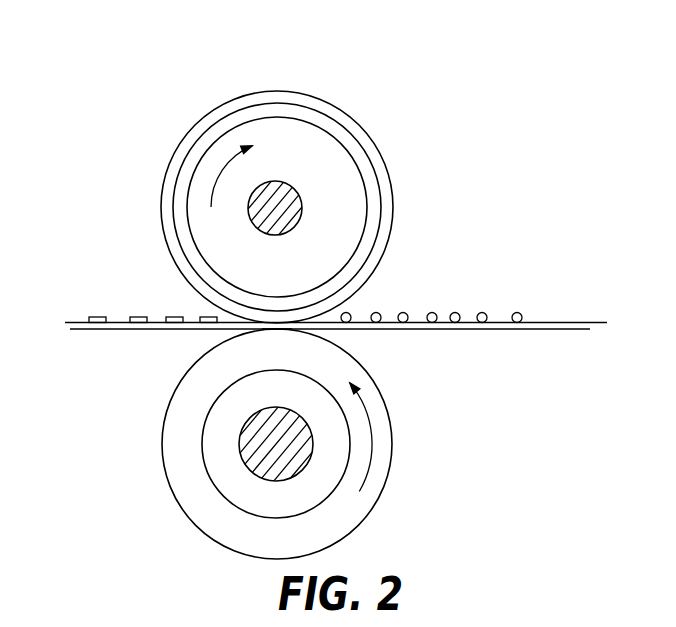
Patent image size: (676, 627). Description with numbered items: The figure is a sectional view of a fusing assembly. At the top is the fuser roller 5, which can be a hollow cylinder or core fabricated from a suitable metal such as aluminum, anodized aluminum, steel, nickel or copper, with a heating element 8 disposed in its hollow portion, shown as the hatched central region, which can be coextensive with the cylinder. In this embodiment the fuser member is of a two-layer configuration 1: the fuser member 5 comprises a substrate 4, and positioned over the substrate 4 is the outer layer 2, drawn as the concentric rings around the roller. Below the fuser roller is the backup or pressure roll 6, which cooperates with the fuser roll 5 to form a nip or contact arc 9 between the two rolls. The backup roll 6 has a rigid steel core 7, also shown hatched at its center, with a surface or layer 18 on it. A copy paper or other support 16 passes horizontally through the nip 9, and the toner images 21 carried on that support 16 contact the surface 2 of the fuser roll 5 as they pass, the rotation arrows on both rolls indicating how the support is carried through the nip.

The two-layer configuration 1 is at (170, 157).
The outer layer 2 is at (208, 122).
The substrate 4 is at (290, 112).
The fuser roller 5 is at (177, 60).
The backup or pressure roll 6 is at (170, 522).
The rigid steel core 7 is at (272, 410).
The heating element 8 is at (278, 182).
The nip or contact arc 9 is at (240, 331).
The copy paper or other support 16 is at (497, 329).
The surface or layer 18 is at (338, 518).
The toner images 21 is at (518, 312).